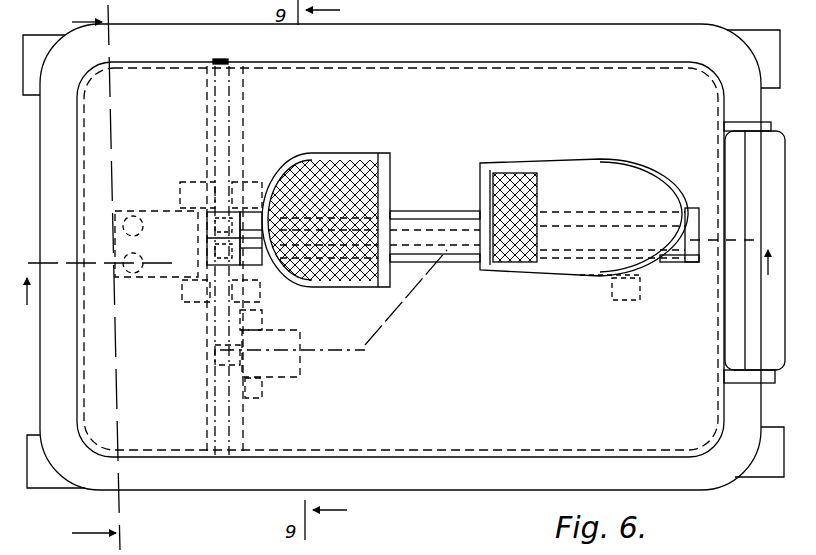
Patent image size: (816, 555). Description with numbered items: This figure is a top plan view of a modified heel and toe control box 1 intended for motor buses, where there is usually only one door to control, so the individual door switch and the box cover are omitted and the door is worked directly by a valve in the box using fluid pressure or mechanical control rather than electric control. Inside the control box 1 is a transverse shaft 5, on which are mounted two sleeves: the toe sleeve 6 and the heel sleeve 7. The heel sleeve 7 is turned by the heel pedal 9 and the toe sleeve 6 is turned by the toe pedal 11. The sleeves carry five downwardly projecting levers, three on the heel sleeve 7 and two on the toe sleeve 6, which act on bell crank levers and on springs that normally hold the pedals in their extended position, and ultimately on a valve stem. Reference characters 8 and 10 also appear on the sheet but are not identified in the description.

The heel and toe control box 1 is at (372, 91).
The transverse shaft 5 is at (218, 58).
The toe sleeve 6 is at (243, 140).
The heel sleeve 7 is at (258, 428).
The section line 8- 8 is at (104, 277).
The heel pedal 9 is at (349, 168).
The rod 10 is at (430, 218).
The toe pedal 11 is at (560, 166).